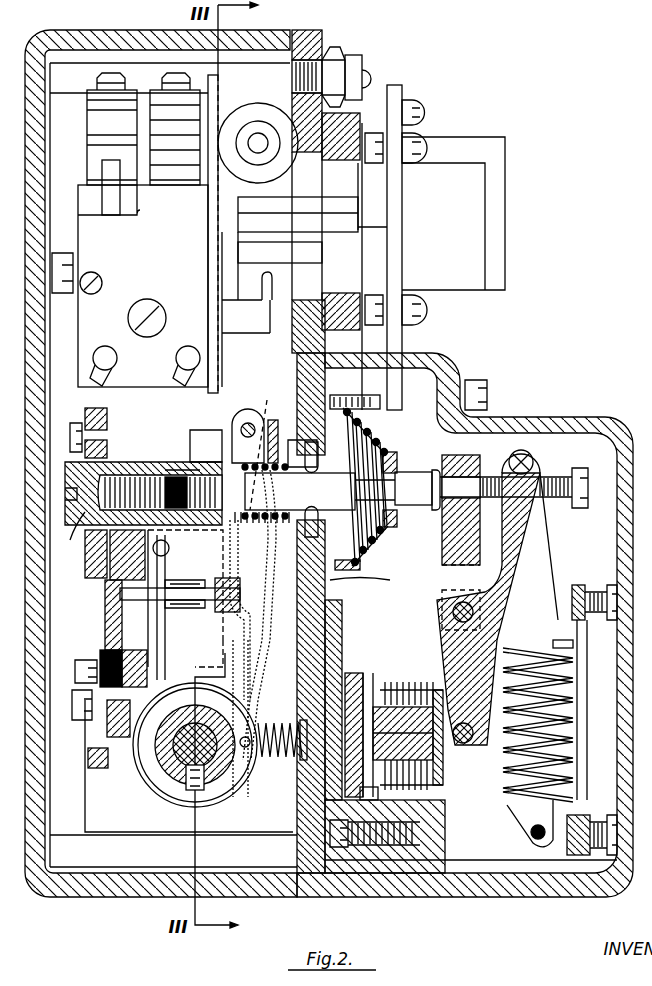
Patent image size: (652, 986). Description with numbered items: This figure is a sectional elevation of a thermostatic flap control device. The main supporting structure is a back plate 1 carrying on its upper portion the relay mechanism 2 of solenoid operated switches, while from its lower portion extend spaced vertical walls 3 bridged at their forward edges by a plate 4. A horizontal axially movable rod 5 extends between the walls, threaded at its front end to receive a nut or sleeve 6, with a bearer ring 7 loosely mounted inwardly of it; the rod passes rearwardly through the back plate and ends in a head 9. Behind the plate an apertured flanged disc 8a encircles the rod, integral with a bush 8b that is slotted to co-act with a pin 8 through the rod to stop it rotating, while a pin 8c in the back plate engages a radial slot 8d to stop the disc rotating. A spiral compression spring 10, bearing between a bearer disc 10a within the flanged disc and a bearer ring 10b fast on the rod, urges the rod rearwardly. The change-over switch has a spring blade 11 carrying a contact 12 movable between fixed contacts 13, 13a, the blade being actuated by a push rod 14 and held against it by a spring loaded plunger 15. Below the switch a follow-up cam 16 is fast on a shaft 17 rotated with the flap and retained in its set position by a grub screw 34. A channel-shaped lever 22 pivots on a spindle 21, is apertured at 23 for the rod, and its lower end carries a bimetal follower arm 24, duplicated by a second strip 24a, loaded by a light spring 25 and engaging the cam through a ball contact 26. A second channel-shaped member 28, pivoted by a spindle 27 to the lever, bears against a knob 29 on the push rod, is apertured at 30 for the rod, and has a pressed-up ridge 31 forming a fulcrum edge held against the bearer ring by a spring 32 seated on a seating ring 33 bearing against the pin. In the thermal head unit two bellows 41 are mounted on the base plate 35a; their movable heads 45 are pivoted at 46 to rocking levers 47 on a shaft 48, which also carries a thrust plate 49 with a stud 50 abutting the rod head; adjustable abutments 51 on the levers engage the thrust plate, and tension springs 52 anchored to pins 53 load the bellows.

The back plate 1 is at (335, 300).
The relay mechanism 2 is at (135, 234).
The vertical walls 3 is at (100, 812).
The plate 4 is at (84, 418).
The rod 5 is at (137, 468).
The nut or sleeve 6 is at (71, 534).
The bearer ring 7 is at (213, 525).
The pin 8 is at (370, 446).
The apertured flanged disc 8a is at (380, 408).
The bush 8b is at (330, 392).
The pin 8c is at (388, 659).
The radial slot 8d is at (359, 567).
The head 9 is at (455, 458).
The spiral compression spring 10 is at (413, 470).
The bearer disc 10a is at (390, 525).
The bearer ring 10b is at (403, 459).
The spring blade 11 is at (92, 665).
The contact 12 is at (90, 762).
The fixed contact 13 is at (90, 722).
The fixed contact 13a is at (170, 747).
The push rod 14 is at (103, 633).
The spring loaded plunger 15 is at (108, 605).
The follow-up cam 16 is at (167, 773).
The shaft 17 is at (185, 760).
The spindle 21 is at (272, 655).
The channel-shaped lever 22 is at (300, 440).
The aperture 23 is at (232, 462).
The follower arm 24 is at (272, 760).
The second strip 24a is at (262, 740).
The light spring 25 is at (286, 758).
The ball contact 26 is at (200, 772).
The spindle 27 is at (240, 440).
The channel-shaped member 28 is at (250, 424).
The knob 29 is at (263, 660).
The aperture 30 is at (168, 475).
The pressed-up ridge 31 is at (187, 463).
The spring 32 is at (222, 458).
The seating ring 33 is at (370, 577).
The grub screw 34 is at (190, 782).
The base plate 35a is at (388, 602).
The bellows 41 is at (428, 800).
The movable heads 45 is at (465, 770).
The pivot 46 is at (472, 745).
The rocking levers 47 is at (456, 662).
The shaft 48 is at (452, 612).
The thrust plate 49 is at (522, 560).
The stud 50 is at (485, 455).
The abutments 51 is at (522, 488).
The tension springs 52 is at (560, 718).
The anchoring pins 53 is at (540, 840).